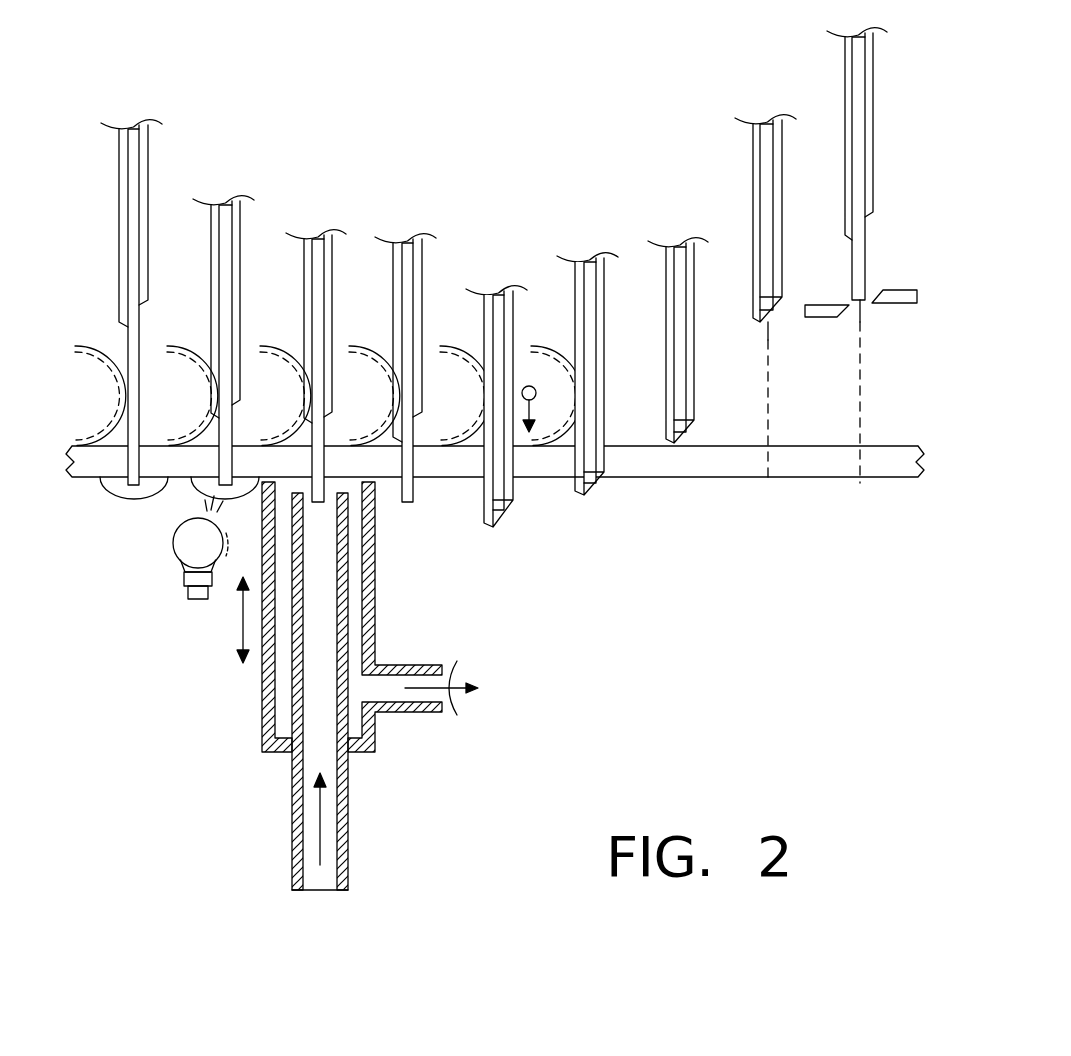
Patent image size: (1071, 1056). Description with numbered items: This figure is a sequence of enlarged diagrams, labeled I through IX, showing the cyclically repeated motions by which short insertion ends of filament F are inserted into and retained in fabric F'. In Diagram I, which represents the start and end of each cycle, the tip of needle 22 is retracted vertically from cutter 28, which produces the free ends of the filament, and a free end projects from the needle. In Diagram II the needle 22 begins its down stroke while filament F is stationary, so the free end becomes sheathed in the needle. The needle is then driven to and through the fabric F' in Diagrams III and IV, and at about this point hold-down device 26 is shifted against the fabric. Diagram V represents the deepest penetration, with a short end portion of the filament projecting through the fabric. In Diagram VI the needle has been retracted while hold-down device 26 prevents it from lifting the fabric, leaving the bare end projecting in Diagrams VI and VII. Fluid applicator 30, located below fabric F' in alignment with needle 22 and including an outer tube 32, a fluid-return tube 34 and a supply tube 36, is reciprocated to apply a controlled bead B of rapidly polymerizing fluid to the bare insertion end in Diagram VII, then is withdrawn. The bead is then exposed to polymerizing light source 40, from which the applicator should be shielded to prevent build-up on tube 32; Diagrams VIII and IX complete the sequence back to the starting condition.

The needle 22 is at (875, 112).
The hold-down device 26 is at (83, 343).
The cutter 28 is at (818, 318).
The fluid applicator 30 is at (381, 686).
The outer tube 32 is at (375, 565).
The fluid-return tube 34 is at (410, 714).
The supply tube 36 is at (348, 822).
The polymerizing light source 40 is at (183, 576).
The bead B is at (200, 484).
The filament F is at (815, 342).
The fabric F' is at (495, 493).
The Diagram I is at (845, 72).
The Diagram II is at (753, 155).
The Diagram III is at (666, 272).
The Diagram IV is at (575, 285).
The Diagram V is at (484, 322).
The Diagram VI is at (393, 315).
The Diagram VII is at (304, 298).
The Diagram VIII is at (211, 285).
The Diagram IX is at (118, 190).